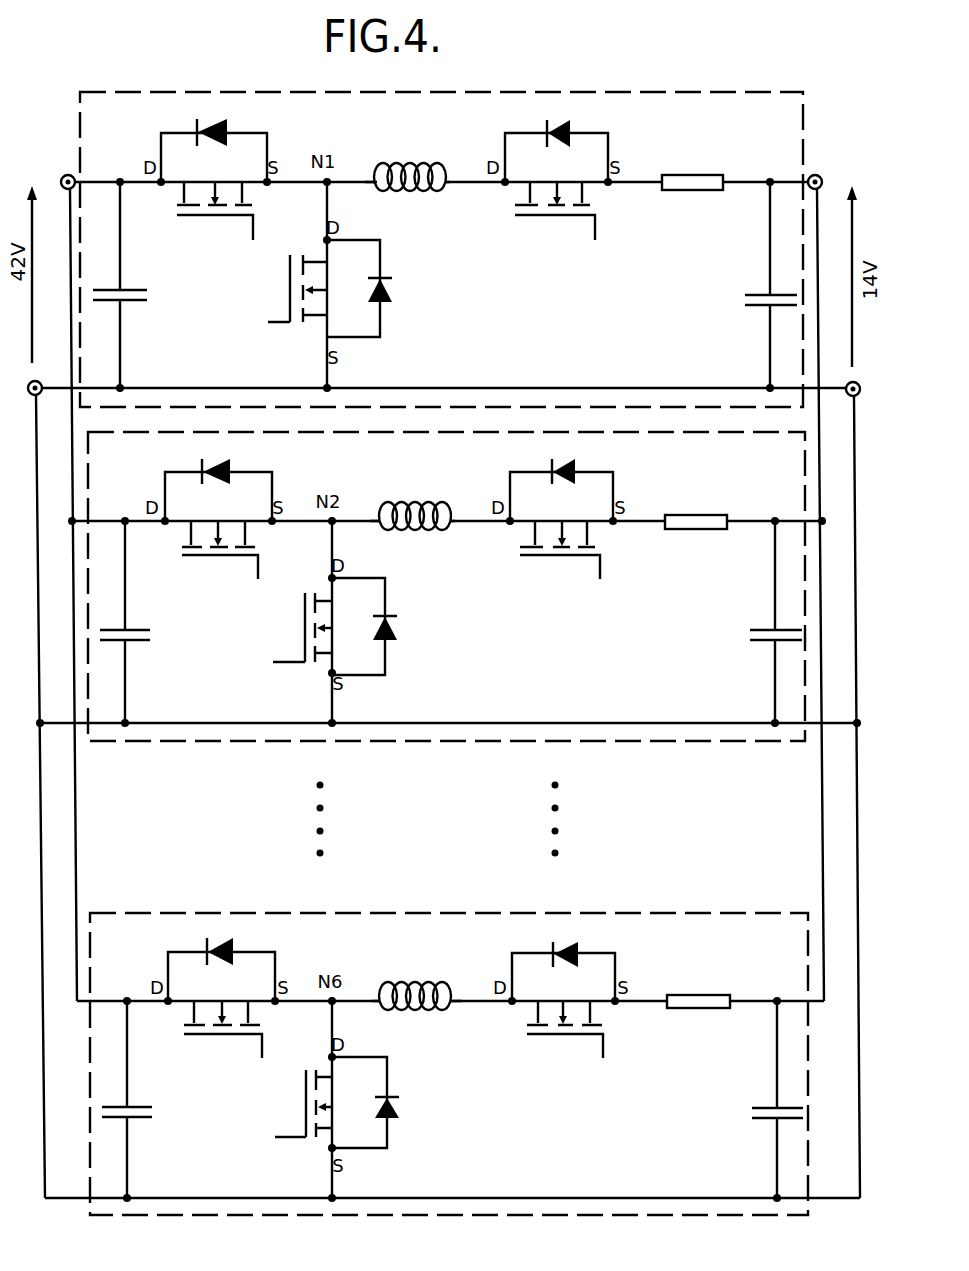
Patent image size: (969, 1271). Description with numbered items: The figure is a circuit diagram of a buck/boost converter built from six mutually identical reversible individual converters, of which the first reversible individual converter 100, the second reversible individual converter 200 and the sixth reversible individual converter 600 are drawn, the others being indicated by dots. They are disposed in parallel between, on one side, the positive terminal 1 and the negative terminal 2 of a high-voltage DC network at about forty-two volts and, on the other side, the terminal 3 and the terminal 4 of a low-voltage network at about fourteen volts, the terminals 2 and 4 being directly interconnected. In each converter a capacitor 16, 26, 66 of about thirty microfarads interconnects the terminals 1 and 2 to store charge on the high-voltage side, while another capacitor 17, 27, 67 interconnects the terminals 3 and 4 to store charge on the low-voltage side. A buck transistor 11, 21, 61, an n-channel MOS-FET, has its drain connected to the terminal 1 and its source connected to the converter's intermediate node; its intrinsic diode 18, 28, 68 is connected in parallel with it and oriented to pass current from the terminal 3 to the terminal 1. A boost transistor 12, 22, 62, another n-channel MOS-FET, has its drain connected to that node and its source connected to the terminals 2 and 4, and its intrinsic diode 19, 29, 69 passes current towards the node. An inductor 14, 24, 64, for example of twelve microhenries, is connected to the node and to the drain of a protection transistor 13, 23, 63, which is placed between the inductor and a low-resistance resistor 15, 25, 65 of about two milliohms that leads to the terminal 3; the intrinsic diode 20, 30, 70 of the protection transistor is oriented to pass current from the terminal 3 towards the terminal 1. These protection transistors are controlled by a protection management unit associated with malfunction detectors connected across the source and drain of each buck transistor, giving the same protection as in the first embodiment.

The positive terminal 1 is at (64, 174).
The negative terminal 2 is at (30, 382).
The terminal 3 is at (820, 173).
The terminal 4 is at (858, 382).
The buck transistor 11 is at (253, 184).
The boost transistor 12 is at (322, 322).
The protection transistor 13 is at (593, 184).
The inductor 14 is at (420, 190).
The resistor 15 is at (680, 186).
The capacitor 16 is at (133, 298).
The capacitor 17 is at (760, 302).
The intrinsic diode 18 is at (212, 119).
The intrinsic diode 19 is at (392, 297).
The intrinsic diode 20 is at (562, 130).
The buck transistor 21 is at (260, 525).
The boost transistor 22 is at (328, 660).
The protection transistor 23 is at (598, 525).
The inductor 24 is at (425, 530).
The resistor 25 is at (700, 524).
The capacitor 26 is at (133, 637).
The capacitor 27 is at (762, 640).
The intrinsic diode 28 is at (233, 470).
The intrinsic diode 29 is at (397, 635).
The intrinsic diode 30 is at (578, 468).
The buck transistor 61 is at (263, 1003).
The boost transistor 62 is at (328, 1130).
The protection transistor 63 is at (617, 1003).
The inductor 64 is at (433, 1008).
The resistor 65 is at (693, 1003).
The capacitor 66 is at (143, 1110).
The capacitor 67 is at (750, 1112).
The intrinsic diode 68 is at (228, 942).
The intrinsic diode 69 is at (399, 1107).
The intrinsic diode 70 is at (572, 948).
The reversible individual converter 100 is at (658, 95).
The reversible individual converter 200 is at (735, 433).
The reversible individual converter 600 is at (670, 912).